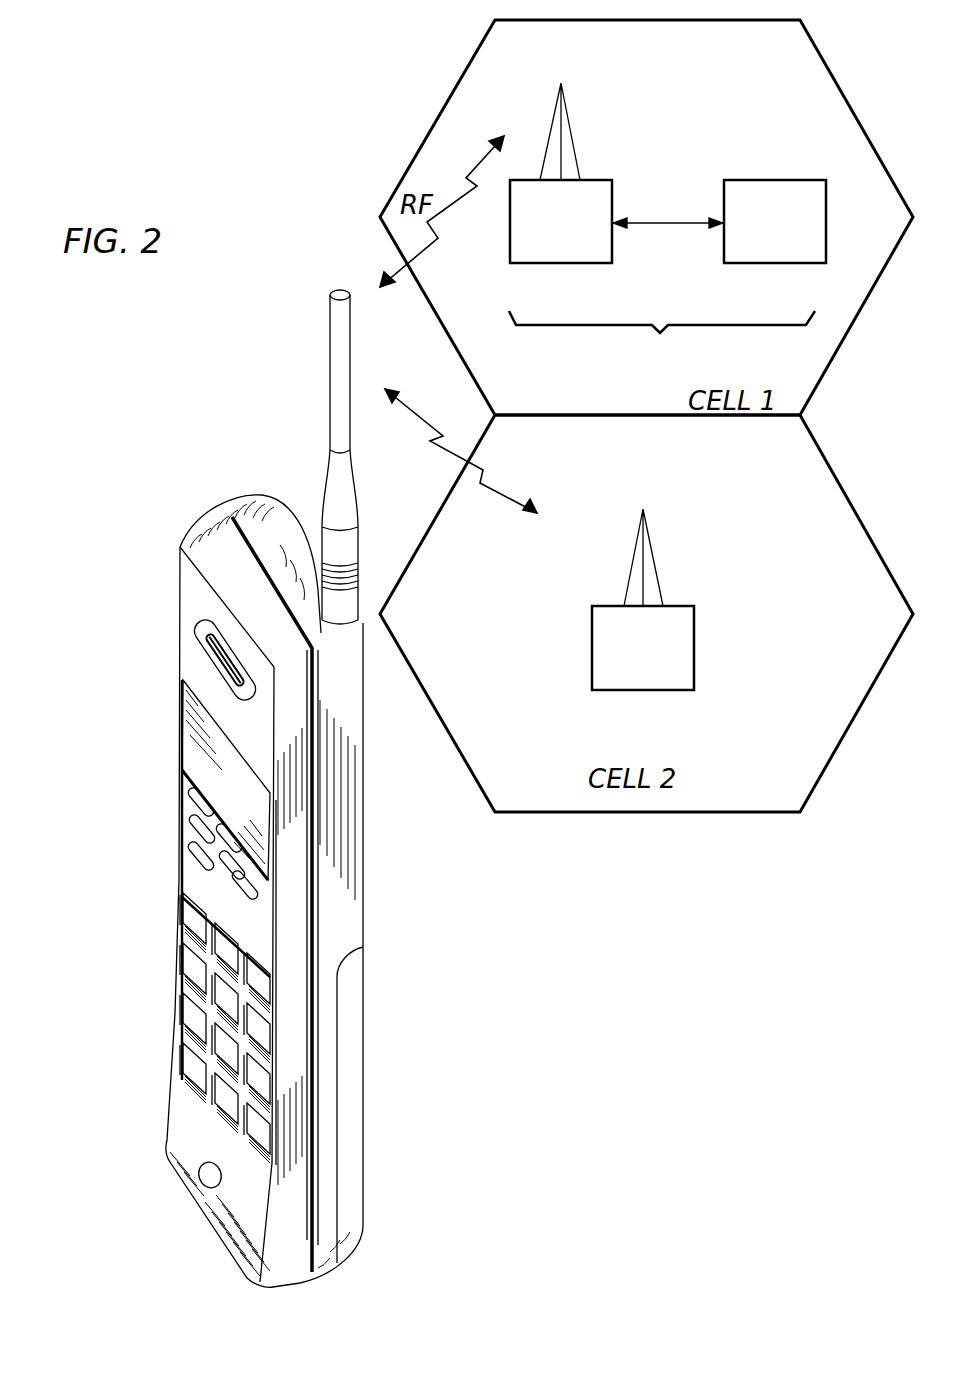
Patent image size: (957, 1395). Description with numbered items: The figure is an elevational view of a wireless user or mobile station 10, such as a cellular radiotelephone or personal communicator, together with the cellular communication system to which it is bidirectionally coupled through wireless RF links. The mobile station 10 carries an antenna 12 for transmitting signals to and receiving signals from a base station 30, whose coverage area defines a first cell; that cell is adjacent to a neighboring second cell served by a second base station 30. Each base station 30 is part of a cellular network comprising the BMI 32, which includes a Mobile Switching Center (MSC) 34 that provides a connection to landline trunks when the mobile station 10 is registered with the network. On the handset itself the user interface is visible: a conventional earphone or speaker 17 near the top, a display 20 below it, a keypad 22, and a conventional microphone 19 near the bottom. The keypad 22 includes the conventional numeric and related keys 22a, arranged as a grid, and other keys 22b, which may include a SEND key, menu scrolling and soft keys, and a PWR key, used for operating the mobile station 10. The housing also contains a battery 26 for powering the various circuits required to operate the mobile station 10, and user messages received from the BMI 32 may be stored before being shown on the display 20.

The mobile station 10 is at (157, 497).
The antenna 12 is at (338, 388).
The speaker 17 is at (215, 641).
The microphone 19 is at (213, 1173).
The display 20 is at (200, 757).
The keypad 22 is at (246, 974).
The numeric and related keys 22a is at (190, 1023).
The other keys 22b is at (195, 852).
The battery 26 is at (350, 1130).
The base station 30 is at (553, 263).
The BMI 32 is at (677, 409).
The Mobile Switching Center (MSC) 34 is at (772, 180).